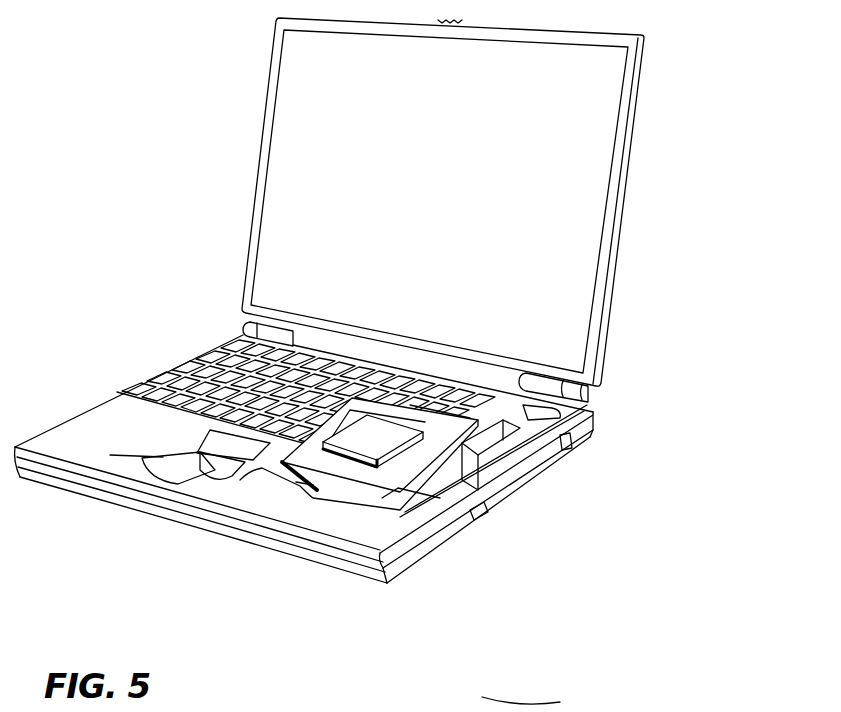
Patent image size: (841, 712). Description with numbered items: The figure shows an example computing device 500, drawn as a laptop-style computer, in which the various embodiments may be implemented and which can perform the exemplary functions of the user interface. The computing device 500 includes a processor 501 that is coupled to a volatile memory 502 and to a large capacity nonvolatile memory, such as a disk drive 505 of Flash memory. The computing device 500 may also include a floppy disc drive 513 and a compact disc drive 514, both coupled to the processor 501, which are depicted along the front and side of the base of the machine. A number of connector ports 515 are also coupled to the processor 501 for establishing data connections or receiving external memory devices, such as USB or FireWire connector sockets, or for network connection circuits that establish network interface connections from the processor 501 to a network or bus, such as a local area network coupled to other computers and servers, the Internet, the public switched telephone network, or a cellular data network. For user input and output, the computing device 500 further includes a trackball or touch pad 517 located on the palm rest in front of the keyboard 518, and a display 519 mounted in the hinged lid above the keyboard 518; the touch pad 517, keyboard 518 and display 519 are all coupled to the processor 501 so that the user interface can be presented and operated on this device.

The computing device 500 is at (254, 188).
The processor 501 is at (385, 449).
The volatile memory 502 is at (313, 485).
The disk drive 505 is at (512, 420).
The floppy disc drive 513 is at (395, 490).
The compact disc (CD) drive 514 is at (476, 516).
The connector ports 515 is at (565, 447).
The touch pad 517 is at (147, 455).
The keyboard 518 is at (198, 363).
The display 519 is at (583, 306).